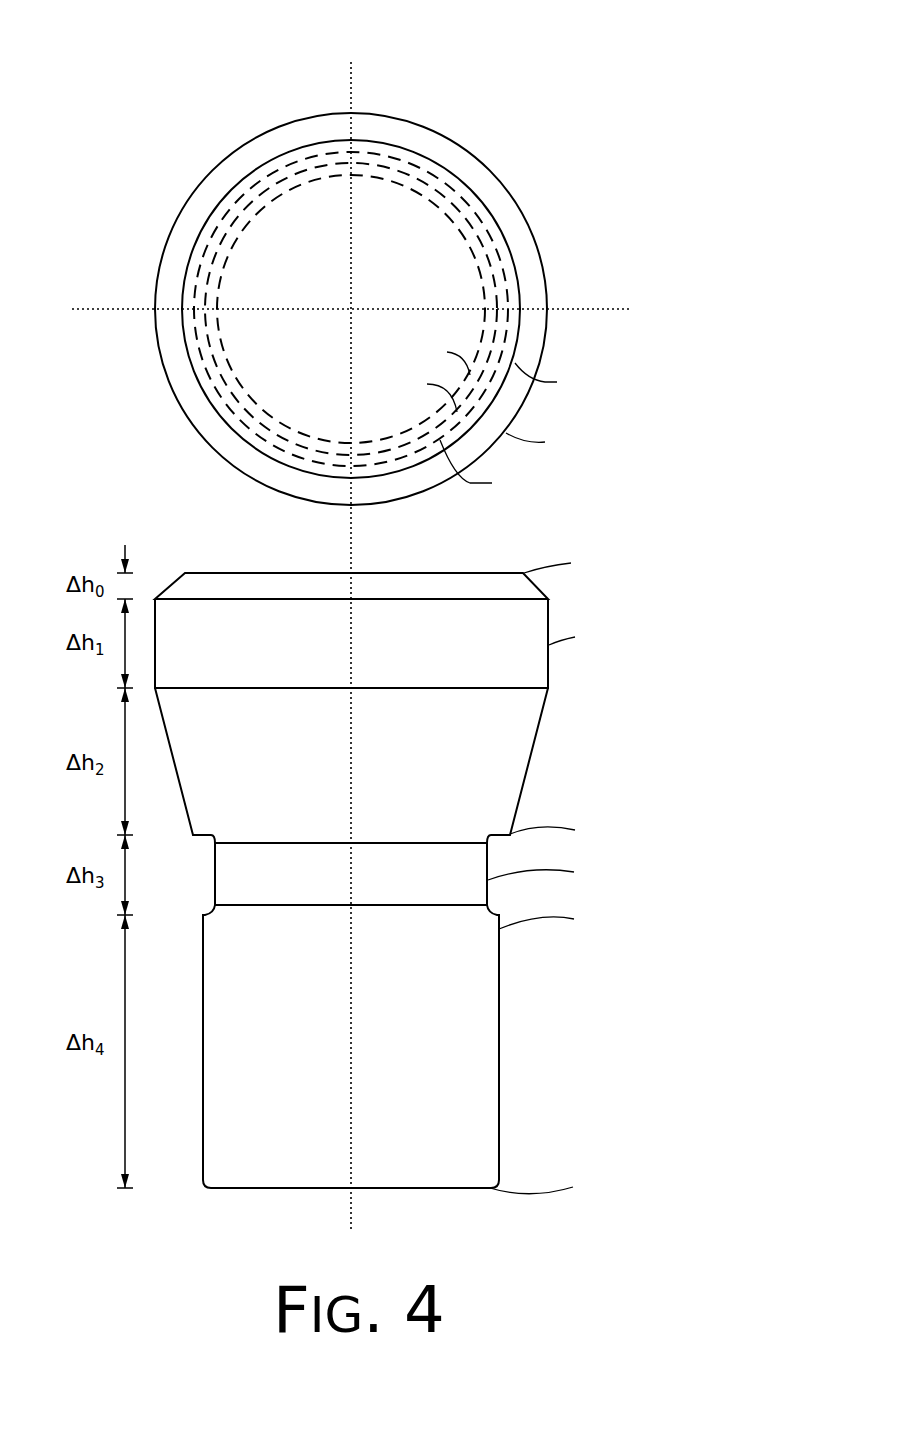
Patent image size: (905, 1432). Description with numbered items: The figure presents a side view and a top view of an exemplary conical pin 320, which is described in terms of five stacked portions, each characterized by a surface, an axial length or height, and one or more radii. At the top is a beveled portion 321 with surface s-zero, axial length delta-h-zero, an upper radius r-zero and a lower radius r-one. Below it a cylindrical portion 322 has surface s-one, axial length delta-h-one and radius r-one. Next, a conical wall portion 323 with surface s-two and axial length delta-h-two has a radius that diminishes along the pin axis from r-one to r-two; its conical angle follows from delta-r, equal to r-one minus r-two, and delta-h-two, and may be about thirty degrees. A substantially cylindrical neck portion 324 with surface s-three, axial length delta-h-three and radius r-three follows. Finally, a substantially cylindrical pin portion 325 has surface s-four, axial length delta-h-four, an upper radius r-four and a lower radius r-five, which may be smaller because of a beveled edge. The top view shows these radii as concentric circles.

The conical pin 320 is at (514, 31).
The beveled portion 321 is at (462, 583).
The cylindrical portion 322 is at (351, 643).
The conical wall portion 323 is at (351, 765).
The neck portion 324 is at (351, 874).
The pin portion 325 is at (351, 1046).